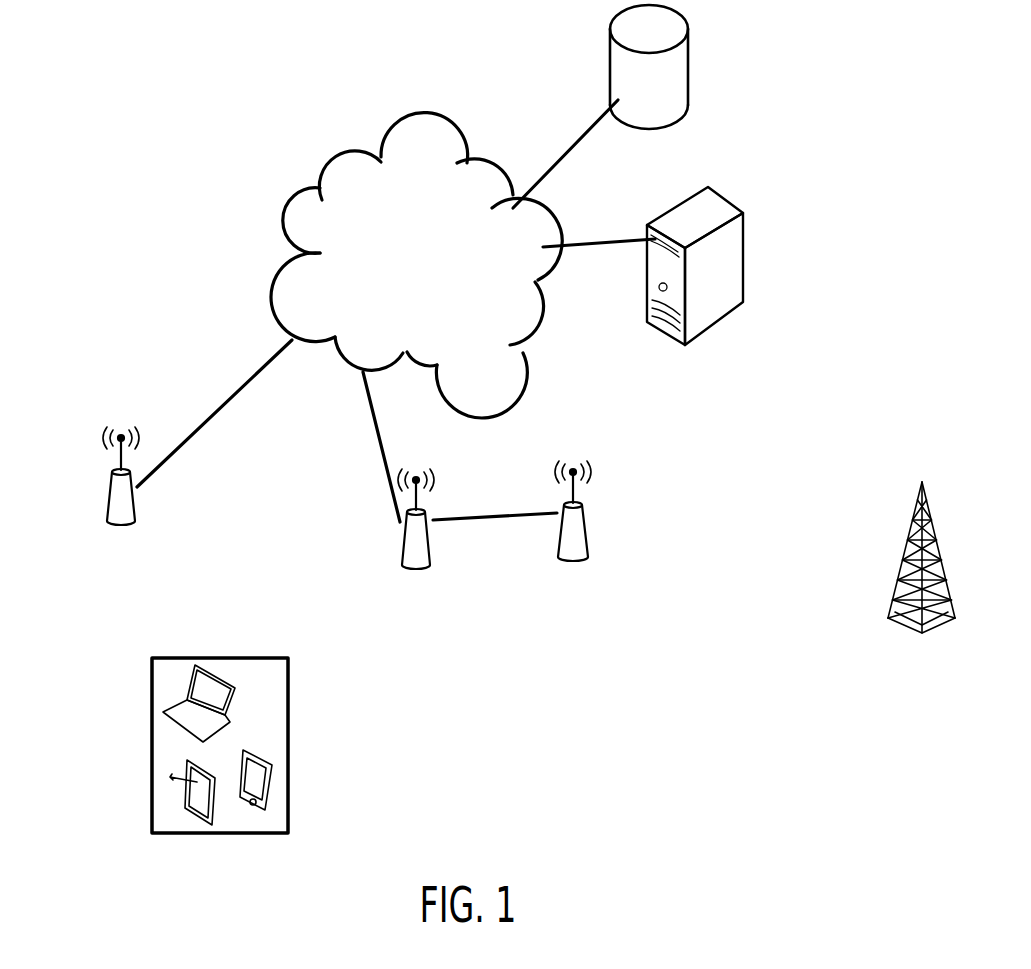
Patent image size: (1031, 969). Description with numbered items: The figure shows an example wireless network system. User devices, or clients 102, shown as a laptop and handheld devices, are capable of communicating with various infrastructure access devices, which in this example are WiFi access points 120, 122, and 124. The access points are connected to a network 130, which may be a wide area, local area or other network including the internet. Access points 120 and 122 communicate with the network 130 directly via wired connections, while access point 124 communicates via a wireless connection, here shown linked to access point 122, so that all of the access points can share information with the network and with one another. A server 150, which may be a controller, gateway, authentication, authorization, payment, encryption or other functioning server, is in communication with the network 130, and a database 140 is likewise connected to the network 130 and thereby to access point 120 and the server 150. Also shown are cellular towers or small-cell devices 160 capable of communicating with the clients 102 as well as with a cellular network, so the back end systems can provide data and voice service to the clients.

The clients 102 is at (152, 777).
The access point 120 is at (105, 521).
The access point 122 is at (402, 562).
The access point 124 is at (560, 558).
The network 130 is at (396, 311).
The database 140 is at (649, 67).
The server 150 is at (745, 213).
The cellular towers or small-cell devices 160 is at (922, 483).